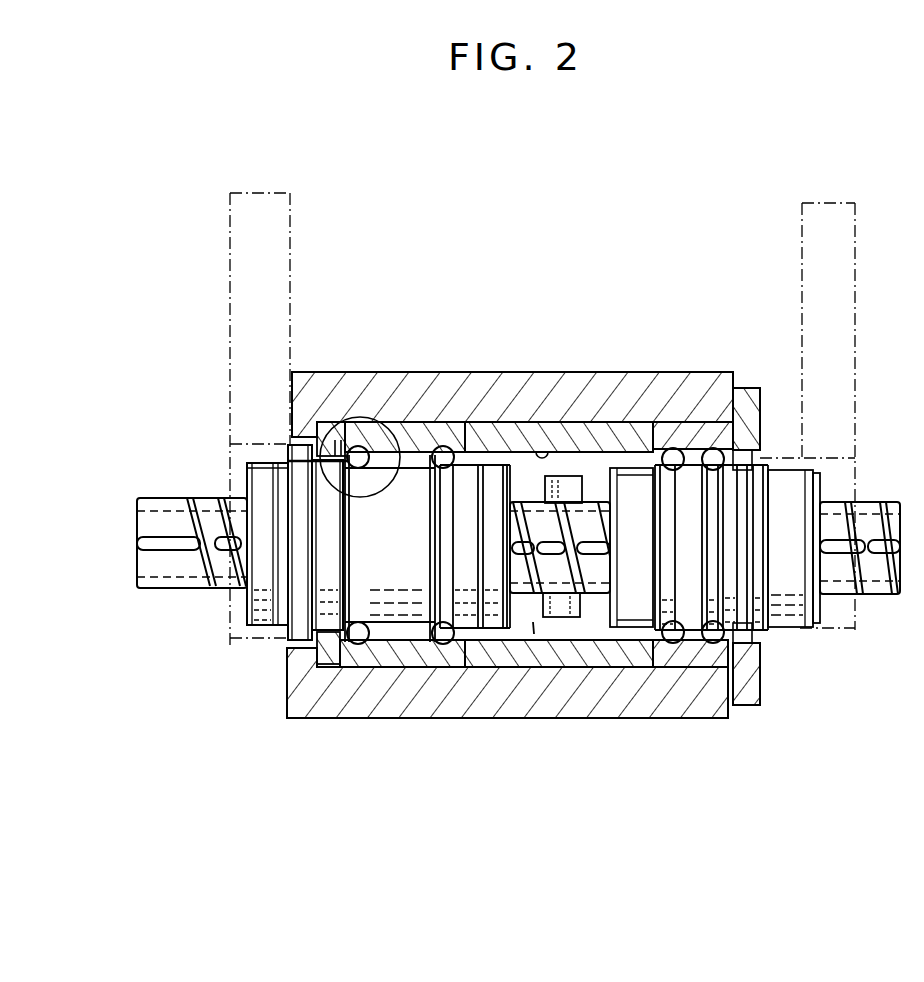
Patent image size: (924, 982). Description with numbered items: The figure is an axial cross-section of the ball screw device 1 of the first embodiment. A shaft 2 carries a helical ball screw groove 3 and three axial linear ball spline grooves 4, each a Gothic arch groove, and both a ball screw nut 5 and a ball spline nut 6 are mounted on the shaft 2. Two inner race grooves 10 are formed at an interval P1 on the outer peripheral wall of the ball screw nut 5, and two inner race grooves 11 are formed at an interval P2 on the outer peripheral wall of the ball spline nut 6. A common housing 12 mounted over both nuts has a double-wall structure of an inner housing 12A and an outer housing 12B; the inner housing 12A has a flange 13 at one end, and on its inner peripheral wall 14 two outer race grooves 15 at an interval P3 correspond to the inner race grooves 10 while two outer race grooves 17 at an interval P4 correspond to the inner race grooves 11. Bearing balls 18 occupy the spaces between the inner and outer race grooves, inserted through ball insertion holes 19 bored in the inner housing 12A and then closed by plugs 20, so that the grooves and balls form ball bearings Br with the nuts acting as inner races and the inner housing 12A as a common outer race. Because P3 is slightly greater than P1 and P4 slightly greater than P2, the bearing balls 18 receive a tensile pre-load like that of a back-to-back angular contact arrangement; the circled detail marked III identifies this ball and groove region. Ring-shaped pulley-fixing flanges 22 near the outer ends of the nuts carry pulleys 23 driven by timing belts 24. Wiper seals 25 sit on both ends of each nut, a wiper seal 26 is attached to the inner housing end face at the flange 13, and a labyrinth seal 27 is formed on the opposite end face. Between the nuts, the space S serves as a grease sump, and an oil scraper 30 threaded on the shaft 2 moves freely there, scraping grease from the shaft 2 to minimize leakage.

The ball screw device 1 is at (573, 250).
The shaft 2 is at (150, 497).
The ball screw groove 3 is at (213, 498).
The ball spline grooves 4 is at (586, 600).
The ball screw nut 5 is at (812, 616).
The ball spline nut 6 is at (247, 612).
The inner race grooves 10 is at (632, 630).
The inner race grooves 11 is at (366, 600).
The housing 12 is at (558, 290).
The inner housing 12A is at (512, 422).
The outer housing 12B is at (478, 420).
The flange 13 is at (731, 712).
The inner peripheral wall 14 is at (544, 450).
The outer race grooves 15 is at (690, 632).
The outer race grooves 17 is at (336, 632).
The bearing balls 18 is at (350, 642).
The ball insertion holes 19 is at (325, 432).
The plugs 20 is at (340, 447).
The pulley-fixing flanges 22 is at (750, 476).
The pulleys 23 is at (247, 480).
The timing belts 24 is at (292, 232).
The wiper seals 25 is at (283, 606).
The wiper seal 26 is at (760, 660).
The labyrinth seal 27 is at (318, 641).
The oil scraper 30 is at (572, 477).
The space S is at (533, 628).
The ball bearings Br is at (392, 763).
The interval P1 is at (673, 478).
The interval P2 is at (358, 475).
The interval P3 is at (718, 345).
The interval P4 is at (443, 345).
The section III is at (414, 490).